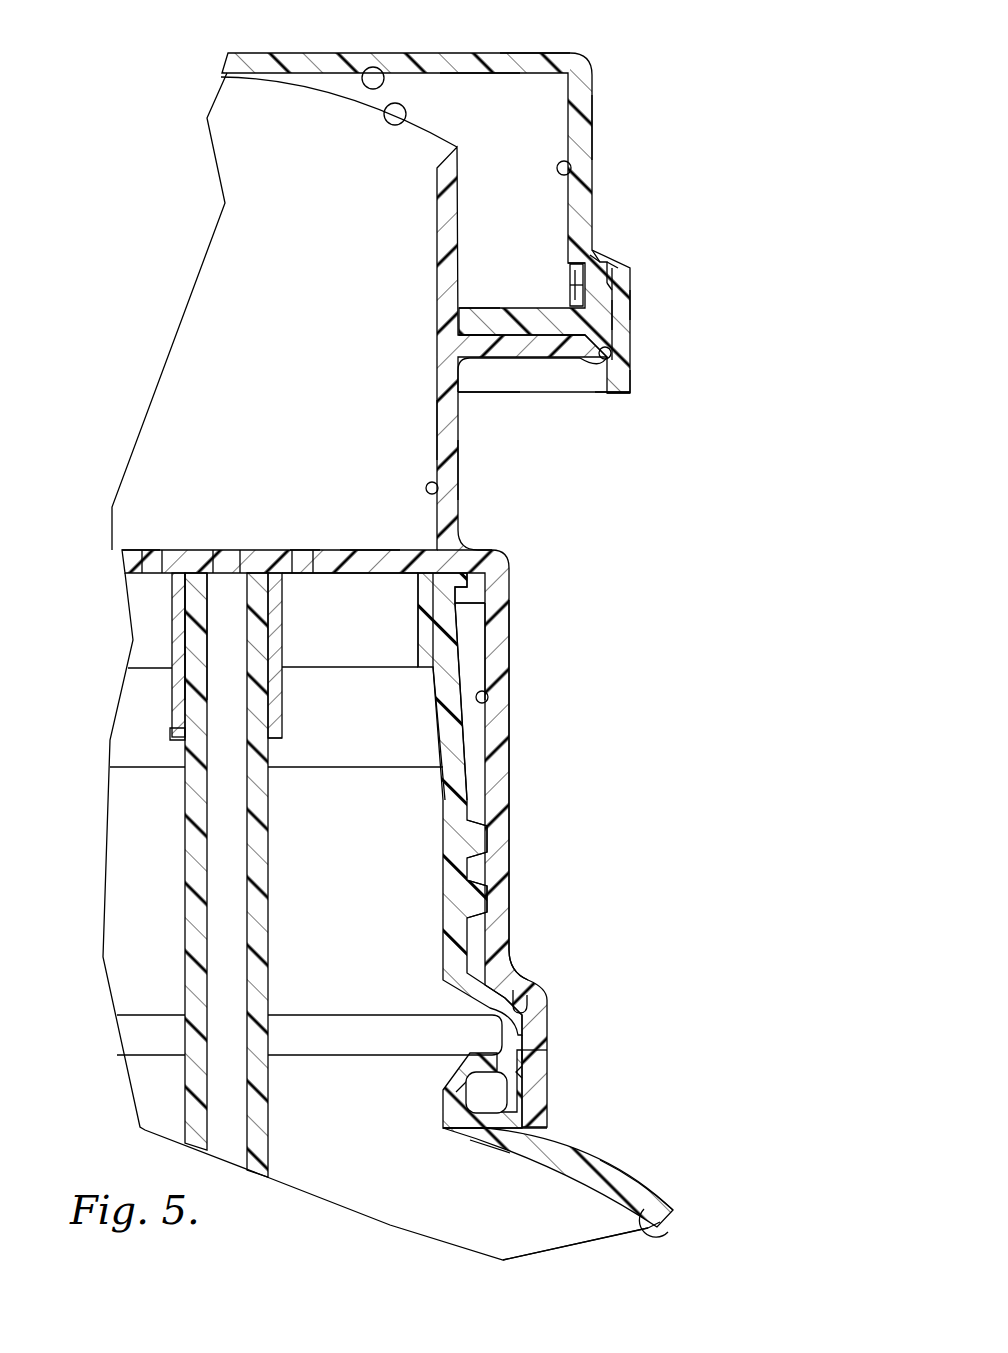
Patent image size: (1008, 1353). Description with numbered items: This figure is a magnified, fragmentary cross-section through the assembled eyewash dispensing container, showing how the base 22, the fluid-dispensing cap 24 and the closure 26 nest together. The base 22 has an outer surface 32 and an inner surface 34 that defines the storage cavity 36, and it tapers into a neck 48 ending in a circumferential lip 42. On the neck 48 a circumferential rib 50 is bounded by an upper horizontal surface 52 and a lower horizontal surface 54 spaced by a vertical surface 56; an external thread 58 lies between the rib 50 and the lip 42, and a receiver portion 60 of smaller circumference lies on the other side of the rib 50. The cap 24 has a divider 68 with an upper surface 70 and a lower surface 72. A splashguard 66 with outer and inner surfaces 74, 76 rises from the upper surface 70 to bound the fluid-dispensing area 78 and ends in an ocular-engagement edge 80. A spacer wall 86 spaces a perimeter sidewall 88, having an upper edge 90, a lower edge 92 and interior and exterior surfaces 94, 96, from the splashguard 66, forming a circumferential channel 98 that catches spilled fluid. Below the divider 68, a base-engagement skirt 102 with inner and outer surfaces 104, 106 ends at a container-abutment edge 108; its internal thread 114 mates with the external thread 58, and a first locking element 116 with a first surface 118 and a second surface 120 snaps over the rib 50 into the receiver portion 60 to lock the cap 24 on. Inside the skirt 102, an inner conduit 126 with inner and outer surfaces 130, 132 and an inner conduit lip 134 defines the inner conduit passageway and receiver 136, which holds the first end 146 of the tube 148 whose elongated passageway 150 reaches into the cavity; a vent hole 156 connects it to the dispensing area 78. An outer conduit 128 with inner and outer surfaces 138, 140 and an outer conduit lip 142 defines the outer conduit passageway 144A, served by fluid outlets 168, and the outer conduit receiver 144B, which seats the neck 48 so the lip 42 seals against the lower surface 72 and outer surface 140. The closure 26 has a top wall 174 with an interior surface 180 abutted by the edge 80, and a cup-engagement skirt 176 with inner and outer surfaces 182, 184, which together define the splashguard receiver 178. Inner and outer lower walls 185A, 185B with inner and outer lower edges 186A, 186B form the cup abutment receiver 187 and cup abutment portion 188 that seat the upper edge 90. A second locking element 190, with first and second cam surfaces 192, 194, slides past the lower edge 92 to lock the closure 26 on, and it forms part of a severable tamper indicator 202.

The base 22 is at (674, 1192).
The fluid-dispensing cap 24 is at (516, 781).
The closure 26 is at (602, 82).
The outer surface 32 is at (632, 1190).
The inner surface 34 is at (668, 1232).
The storage cavity 36 is at (587, 1230).
The circumferential lip 42 is at (466, 584).
The neck 48 is at (465, 673).
The circumferential rib 50 is at (530, 1015).
The upper horizontal surface 52 is at (530, 975).
The lower horizontal surface 54 is at (468, 1110).
The vertical surface 56 is at (530, 1041).
The external thread 58 is at (487, 885).
The receiver portion 60 is at (485, 1105).
The splashguard 66 is at (462, 468).
The divider 68 is at (370, 546).
The upper surface 70 is at (418, 547).
The lower surface 72 is at (398, 575).
The outer surface 74 is at (460, 440).
The inner surface 76 is at (440, 492).
The fluid-dispensing area 78 is at (258, 133).
The ocular-engagement edge 80 is at (386, 124).
The spacer wall 86 is at (522, 368).
The perimeter sidewall 88 is at (620, 318).
The upper edge 90 is at (596, 256).
The lower edge 92 is at (582, 394).
The interior surface 94 is at (582, 323).
The exterior surface 96 is at (620, 282).
The circumferential channel 98 is at (485, 326).
The base-engagement skirt 102 is at (516, 716).
The inner surface 104 is at (489, 697).
The outer surface 106 is at (511, 756).
The container-abutment edge 108 is at (542, 1137).
The internal thread 114 is at (476, 965).
The first locking element 116 is at (552, 1090).
The first surface 118 is at (500, 1132).
The second surface 120 is at (527, 1073).
The inner conduit 126 is at (163, 690).
The outer conduit 128 is at (416, 669).
The inner surface 130 is at (180, 736).
The outer surface 132 is at (286, 725).
The inner conduit lip 134 is at (280, 724).
The inner conduit passageway and receiver 136 is at (222, 592).
The inner surface 138 is at (418, 630).
The outer surface 140 is at (432, 662).
The outer conduit lip 142 is at (434, 680).
The outer conduit passageway 144A is at (366, 756).
The outer conduit receiver 144B is at (472, 634).
The first end 146 is at (190, 572).
The tube 148 is at (274, 889).
The elongated passageway 150 is at (228, 957).
The vent hole 156 is at (200, 560).
The fluid outlets 168 is at (148, 565).
The top wall 174 is at (540, 47).
The cup-engagement skirt 176 is at (600, 112).
The splashguard receiver 178 is at (455, 85).
The interior surface 180 is at (362, 70).
The inner surface 182 is at (580, 177).
The outer surface 184 is at (600, 142).
The inner lower wall 185A is at (577, 286).
The outer lower wall 185B is at (632, 300).
The inner lower edge 186A is at (478, 318).
The outer lower edge 186B is at (632, 396).
The cup abutment receiver 187 is at (616, 266).
The cup abutment portion 188 is at (576, 262).
The second locking element 190 is at (640, 382).
The first cam surface 192 is at (602, 400).
The second cam surface 194 is at (612, 356).
The tamper indicator 202 is at (500, 393).